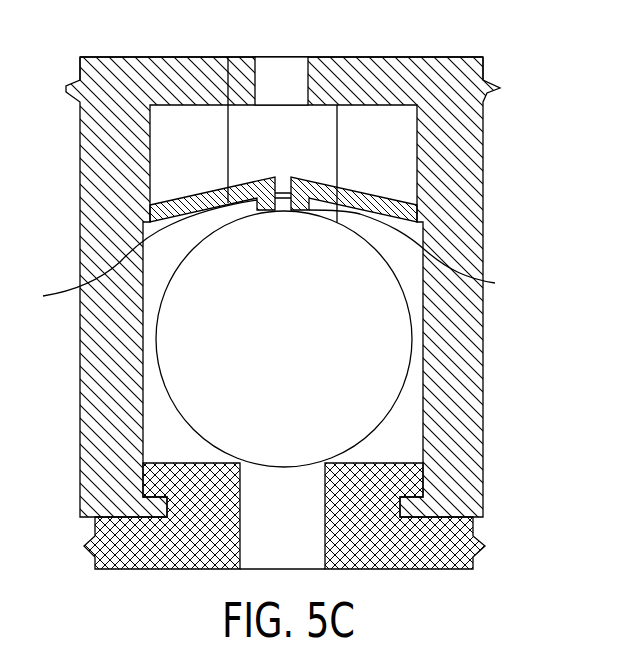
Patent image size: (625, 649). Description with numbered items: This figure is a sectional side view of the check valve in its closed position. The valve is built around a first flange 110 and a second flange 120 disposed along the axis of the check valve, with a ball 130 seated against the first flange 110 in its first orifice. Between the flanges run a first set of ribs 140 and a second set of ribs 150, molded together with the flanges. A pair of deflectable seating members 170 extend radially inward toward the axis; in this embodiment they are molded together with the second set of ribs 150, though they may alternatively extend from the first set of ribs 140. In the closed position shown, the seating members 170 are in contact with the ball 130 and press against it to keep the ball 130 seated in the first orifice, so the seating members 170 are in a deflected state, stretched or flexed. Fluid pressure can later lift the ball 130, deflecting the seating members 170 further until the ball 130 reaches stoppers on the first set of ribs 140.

The first flange 110 is at (113, 558).
The second flange 120 is at (475, 75).
The ball 130 is at (353, 338).
The first set of ribs 140 is at (298, 125).
The second set of ribs 150 is at (93, 196).
The seating members 170 is at (269, 256).